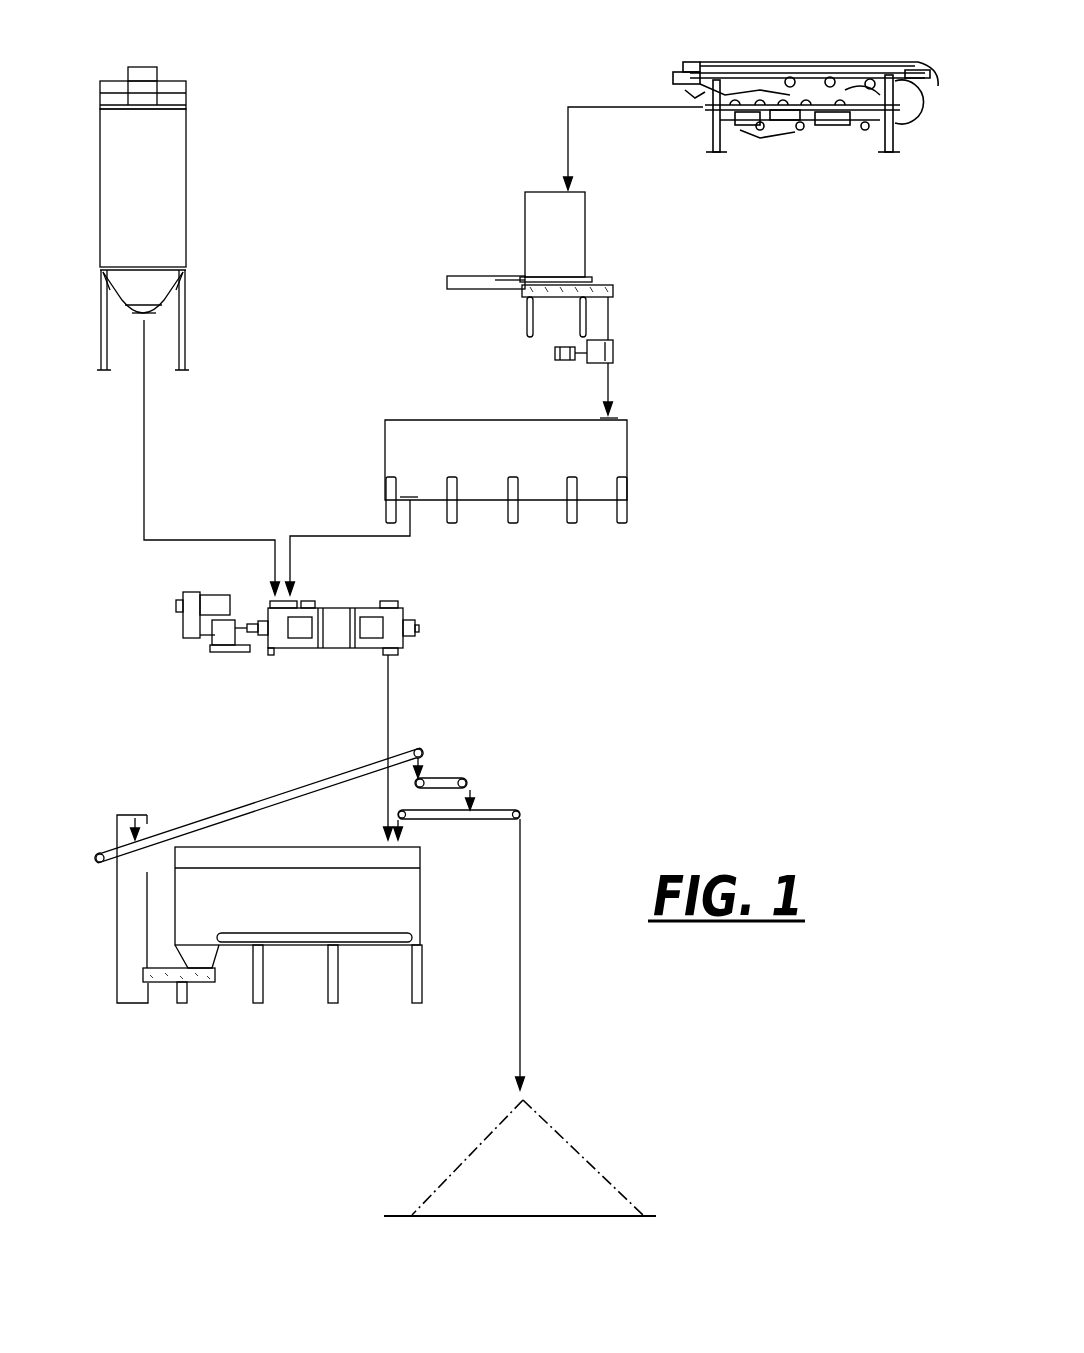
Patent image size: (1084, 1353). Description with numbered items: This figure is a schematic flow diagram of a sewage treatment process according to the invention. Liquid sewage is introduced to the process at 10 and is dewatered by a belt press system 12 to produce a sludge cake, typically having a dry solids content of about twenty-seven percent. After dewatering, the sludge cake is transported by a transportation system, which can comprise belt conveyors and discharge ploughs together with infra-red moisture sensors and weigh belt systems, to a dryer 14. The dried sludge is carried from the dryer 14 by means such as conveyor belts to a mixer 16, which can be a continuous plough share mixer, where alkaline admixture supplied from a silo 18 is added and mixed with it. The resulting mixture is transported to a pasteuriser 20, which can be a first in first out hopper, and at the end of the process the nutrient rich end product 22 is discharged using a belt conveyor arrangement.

The liquid sewage introduction point 10 is at (658, 58).
The belt press system 12 is at (818, 63).
The dryer 14 is at (460, 437).
The mixer 16 is at (283, 645).
The silo 18 is at (165, 210).
The pasteuriser 20 is at (405, 895).
The nutrient rich end product 22 is at (552, 1162).